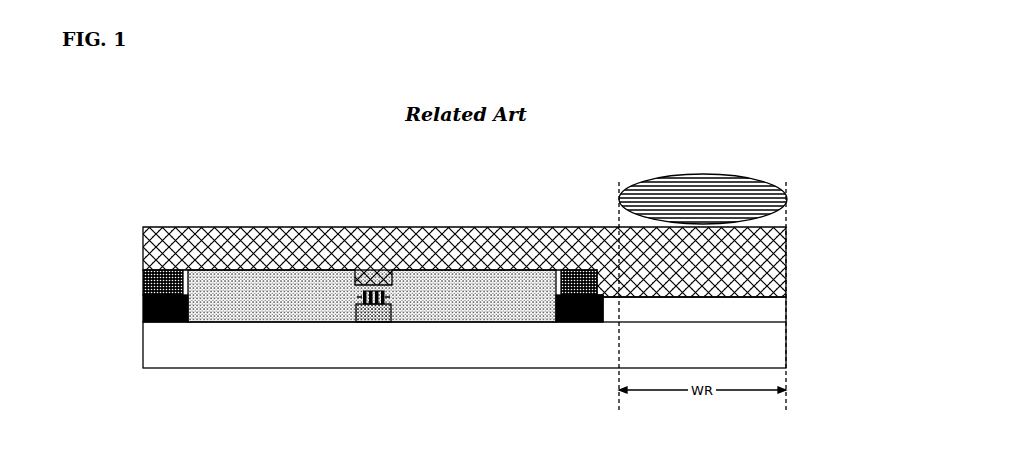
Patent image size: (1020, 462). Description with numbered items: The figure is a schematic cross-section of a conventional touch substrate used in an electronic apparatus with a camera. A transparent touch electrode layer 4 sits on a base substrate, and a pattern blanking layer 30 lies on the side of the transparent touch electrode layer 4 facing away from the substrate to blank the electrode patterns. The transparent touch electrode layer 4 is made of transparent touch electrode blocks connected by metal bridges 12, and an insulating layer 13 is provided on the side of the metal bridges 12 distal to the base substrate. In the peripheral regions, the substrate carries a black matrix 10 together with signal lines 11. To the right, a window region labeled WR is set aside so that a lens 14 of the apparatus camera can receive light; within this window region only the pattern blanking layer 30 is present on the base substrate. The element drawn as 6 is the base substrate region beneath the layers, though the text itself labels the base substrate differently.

The transparent touch electrode layer 4 is at (272, 295).
The substrate 6 is at (786, 345).
The black matrix 10 is at (143, 309).
The signal lines 11 is at (143, 283).
The metal bridges 12 is at (372, 318).
The insulating layer 13 is at (382, 307).
The lens 14 is at (787, 201).
The pattern blanking layer 30 is at (787, 262).